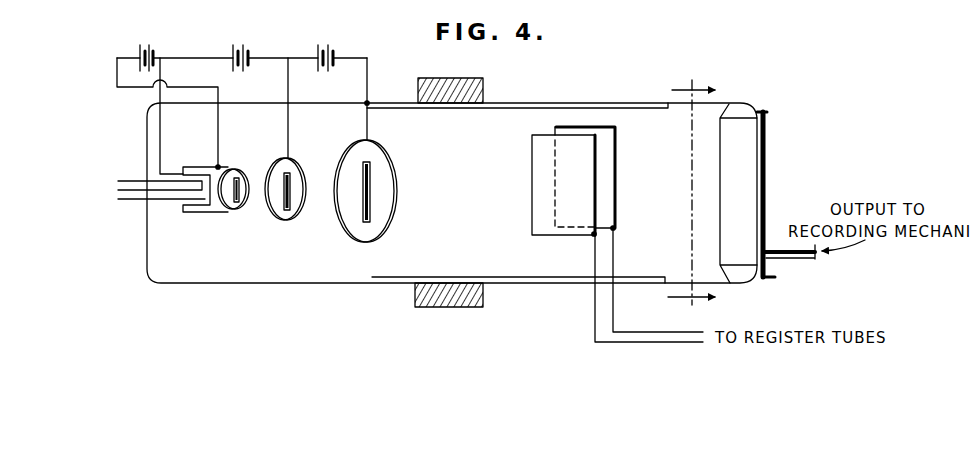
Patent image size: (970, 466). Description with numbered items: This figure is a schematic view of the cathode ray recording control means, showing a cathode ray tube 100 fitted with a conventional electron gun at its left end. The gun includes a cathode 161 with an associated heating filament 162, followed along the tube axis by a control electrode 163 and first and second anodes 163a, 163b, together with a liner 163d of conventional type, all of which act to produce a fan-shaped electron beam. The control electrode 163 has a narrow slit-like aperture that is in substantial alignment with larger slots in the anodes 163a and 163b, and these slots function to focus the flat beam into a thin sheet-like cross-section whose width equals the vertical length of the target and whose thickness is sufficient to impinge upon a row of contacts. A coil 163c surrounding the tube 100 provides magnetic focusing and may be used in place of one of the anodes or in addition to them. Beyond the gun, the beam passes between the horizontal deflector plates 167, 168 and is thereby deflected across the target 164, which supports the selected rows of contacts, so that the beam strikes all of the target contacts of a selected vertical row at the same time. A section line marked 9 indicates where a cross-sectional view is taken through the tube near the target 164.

The cathode ray tube 100 is at (320, 284).
The cathode 161 is at (215, 212).
The heating filament 162 is at (179, 197).
The control electrode 163 is at (240, 170).
The first anode 163a is at (281, 223).
The second anode 163b is at (345, 152).
The coil 163c is at (468, 78).
The liner 163d is at (461, 108).
The target 164 is at (720, 212).
The horizontal deflector plate 167 is at (611, 188).
The horizontal deflector plate 168 is at (543, 186).
The section line 9- 9 is at (691, 193).